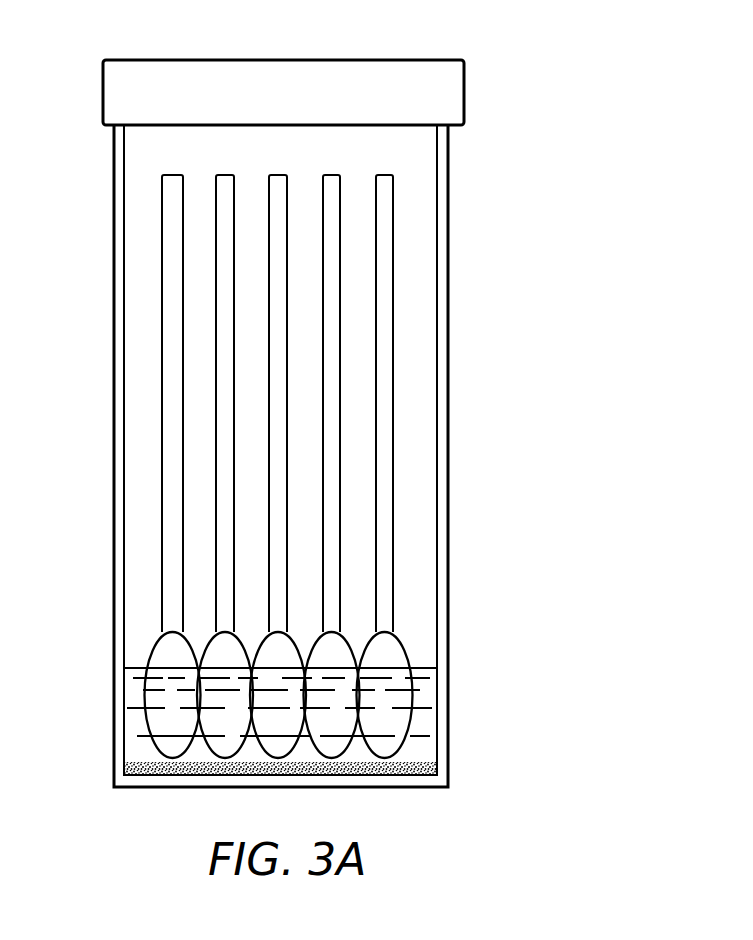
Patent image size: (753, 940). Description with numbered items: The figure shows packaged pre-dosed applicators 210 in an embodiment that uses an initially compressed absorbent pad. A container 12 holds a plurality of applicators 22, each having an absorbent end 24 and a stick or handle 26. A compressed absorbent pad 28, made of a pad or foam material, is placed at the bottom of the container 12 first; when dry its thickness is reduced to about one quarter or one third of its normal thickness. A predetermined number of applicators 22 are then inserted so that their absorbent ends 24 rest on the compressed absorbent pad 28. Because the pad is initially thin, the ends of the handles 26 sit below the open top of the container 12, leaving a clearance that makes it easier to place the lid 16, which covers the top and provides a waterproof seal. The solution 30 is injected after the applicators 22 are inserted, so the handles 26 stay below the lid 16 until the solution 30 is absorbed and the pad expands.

The lid 16 is at (464, 80).
The container 12 is at (113, 290).
The packaged pre-dosed applicators 210 is at (496, 181).
The applicators 22 is at (331, 466).
The handle 26 is at (387, 310).
The absorbent end 24 is at (390, 645).
The solution 30 is at (420, 703).
The compressed absorbent pad 28 is at (125, 770).